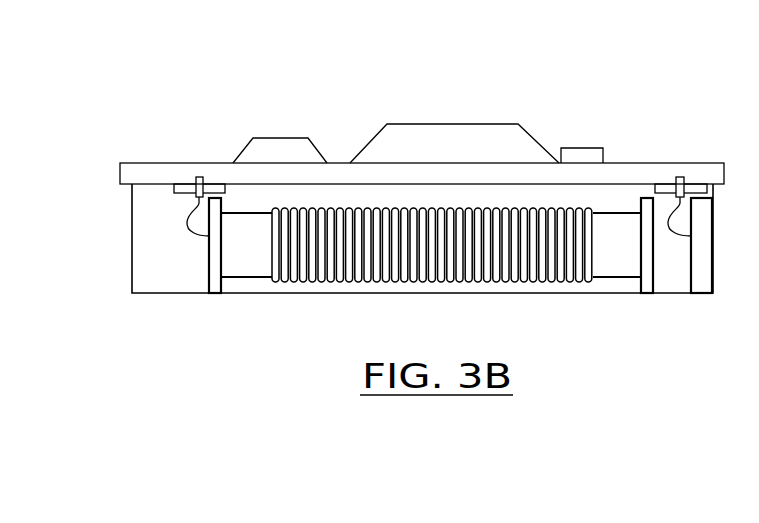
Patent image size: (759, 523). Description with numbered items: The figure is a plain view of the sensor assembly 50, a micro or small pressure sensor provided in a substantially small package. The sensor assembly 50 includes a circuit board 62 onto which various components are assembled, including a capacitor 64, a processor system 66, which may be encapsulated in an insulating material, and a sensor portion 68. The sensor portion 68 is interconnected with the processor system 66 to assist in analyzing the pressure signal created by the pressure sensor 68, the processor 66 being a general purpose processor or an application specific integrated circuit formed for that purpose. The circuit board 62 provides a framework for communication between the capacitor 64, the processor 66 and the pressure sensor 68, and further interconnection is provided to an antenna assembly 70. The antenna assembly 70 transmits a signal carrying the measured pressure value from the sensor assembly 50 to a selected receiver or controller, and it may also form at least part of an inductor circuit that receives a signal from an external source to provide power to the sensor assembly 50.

The sensor assembly 50 is at (219, 95).
The circuit board 62 is at (165, 162).
The capacitor 64 is at (287, 137).
The processor system 66 is at (445, 124).
The sensor portion 68 is at (589, 148).
The antenna assembly 70 is at (543, 282).